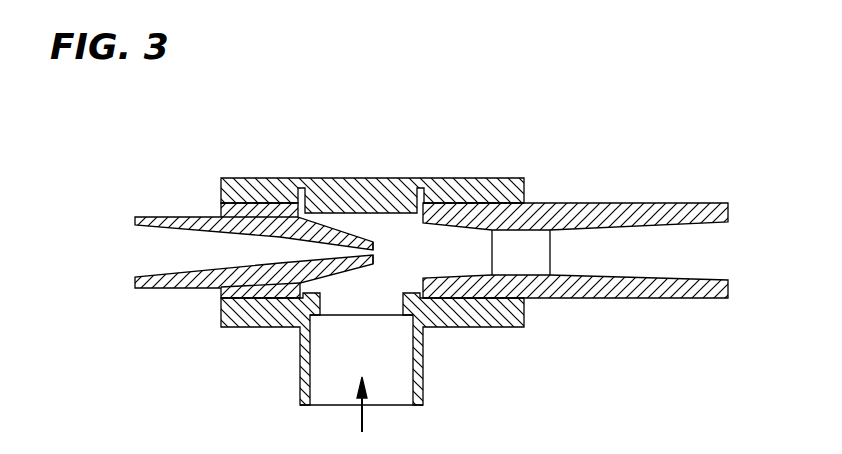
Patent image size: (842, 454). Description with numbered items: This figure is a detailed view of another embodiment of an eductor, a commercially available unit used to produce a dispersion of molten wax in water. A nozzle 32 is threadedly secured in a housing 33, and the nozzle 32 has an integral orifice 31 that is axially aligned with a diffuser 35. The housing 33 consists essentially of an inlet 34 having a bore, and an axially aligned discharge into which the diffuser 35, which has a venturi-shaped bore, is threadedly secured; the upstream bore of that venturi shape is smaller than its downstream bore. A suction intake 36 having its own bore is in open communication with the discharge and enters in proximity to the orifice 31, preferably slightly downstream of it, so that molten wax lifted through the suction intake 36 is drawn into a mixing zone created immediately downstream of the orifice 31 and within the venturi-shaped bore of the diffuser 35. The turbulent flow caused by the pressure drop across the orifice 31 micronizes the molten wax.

The orifice 31 is at (377, 252).
The nozzle 32 is at (173, 225).
The housing 33 is at (362, 180).
The inlet 34 is at (232, 327).
The diffuser 35 is at (610, 207).
The suction intake 36 is at (303, 372).